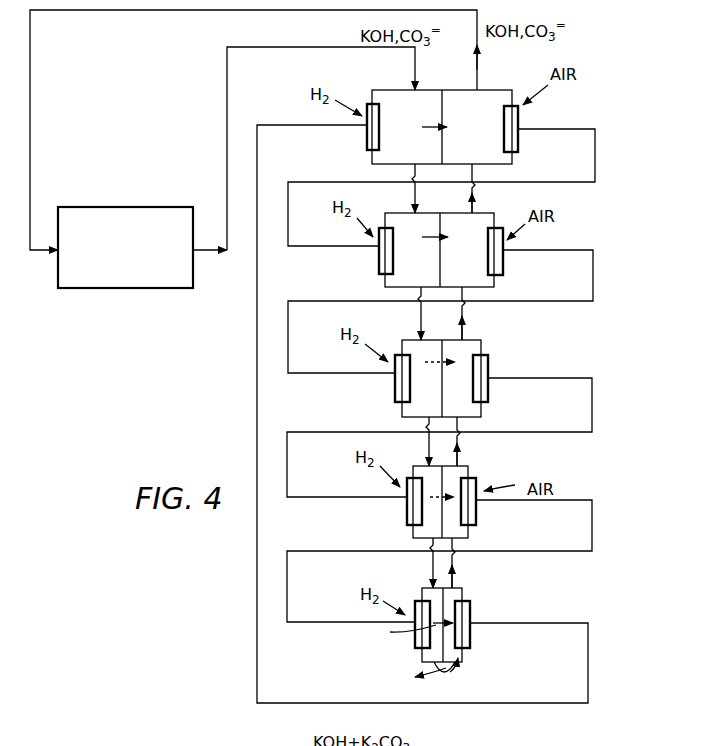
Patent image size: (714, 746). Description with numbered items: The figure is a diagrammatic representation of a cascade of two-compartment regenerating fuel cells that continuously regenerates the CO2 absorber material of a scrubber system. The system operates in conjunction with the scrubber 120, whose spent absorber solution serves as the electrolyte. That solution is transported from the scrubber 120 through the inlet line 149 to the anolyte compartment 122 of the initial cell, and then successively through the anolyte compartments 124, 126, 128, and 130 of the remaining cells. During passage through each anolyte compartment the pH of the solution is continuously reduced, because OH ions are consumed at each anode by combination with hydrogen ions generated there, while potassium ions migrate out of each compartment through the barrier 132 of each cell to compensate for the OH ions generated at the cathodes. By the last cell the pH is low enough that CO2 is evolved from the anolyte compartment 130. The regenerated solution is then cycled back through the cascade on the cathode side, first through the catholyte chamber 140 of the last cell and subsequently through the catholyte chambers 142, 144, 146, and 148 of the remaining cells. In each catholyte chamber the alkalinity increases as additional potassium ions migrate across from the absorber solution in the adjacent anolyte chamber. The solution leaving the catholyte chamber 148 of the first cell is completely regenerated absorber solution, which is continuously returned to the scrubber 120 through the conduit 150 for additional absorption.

The scrubber 120 is at (130, 289).
The anolyte compartment 122 is at (429, 150).
The anolyte compartment 124 is at (429, 261).
The anolyte compartment 126 is at (420, 404).
The anolyte compartment 128 is at (425, 526).
The anolyte compartment 130 is at (436, 650).
The barrier 132 is at (442, 108).
The catholyte chamber 140 is at (458, 595).
The catholyte chamber 142 is at (468, 471).
The catholyte chamber 144 is at (460, 406).
The catholyte chamber 146 is at (484, 261).
The catholyte chamber 148 is at (497, 136).
The inlet line 149 is at (297, 48).
The conduit 150 is at (160, 10).